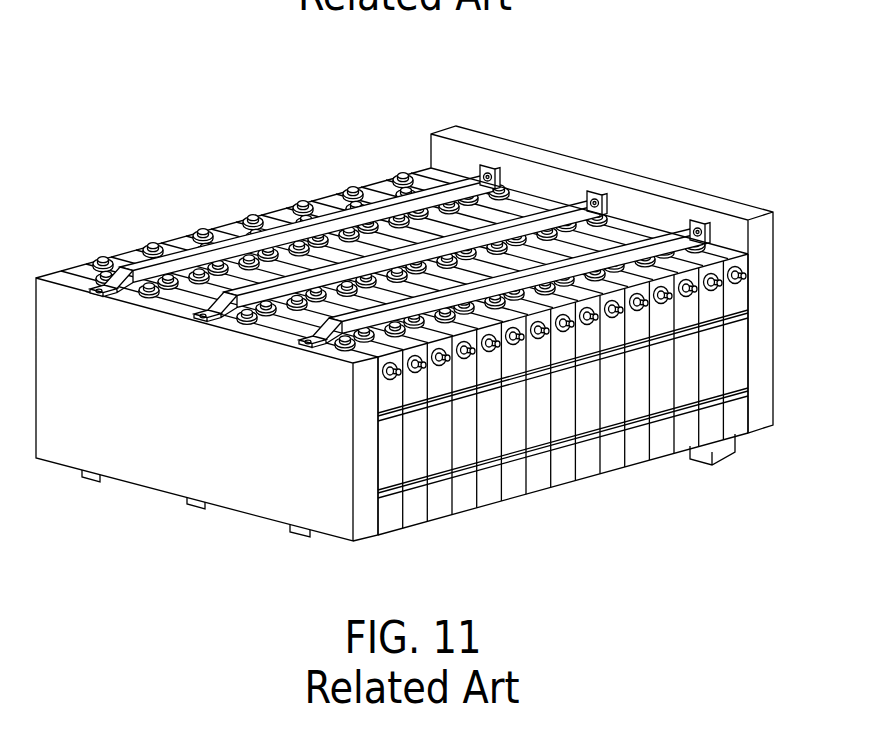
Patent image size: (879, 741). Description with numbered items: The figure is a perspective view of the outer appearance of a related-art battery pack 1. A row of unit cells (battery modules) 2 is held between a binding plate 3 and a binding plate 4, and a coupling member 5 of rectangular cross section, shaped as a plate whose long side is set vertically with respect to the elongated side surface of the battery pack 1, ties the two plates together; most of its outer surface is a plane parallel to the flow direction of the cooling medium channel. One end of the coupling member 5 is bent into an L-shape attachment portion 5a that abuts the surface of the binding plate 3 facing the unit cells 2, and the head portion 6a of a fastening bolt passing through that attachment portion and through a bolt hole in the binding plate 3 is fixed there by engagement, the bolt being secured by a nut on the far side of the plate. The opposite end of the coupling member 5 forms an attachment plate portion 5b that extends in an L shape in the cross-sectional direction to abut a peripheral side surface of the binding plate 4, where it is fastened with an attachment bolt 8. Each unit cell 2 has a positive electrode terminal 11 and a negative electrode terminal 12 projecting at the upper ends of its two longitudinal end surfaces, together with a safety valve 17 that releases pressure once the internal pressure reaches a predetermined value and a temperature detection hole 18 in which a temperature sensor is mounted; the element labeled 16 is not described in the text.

The battery pack 1 is at (518, 103).
The unit cell (battery module) 2 is at (413, 177).
The binding plate 3 is at (645, 203).
The binding plate 4 is at (157, 460).
The coupling member 5 is at (233, 242).
The L-shape attachment portion 5a is at (500, 178).
The attachment plate portion 5b is at (88, 297).
The head portion of the fastening bolt 6a is at (483, 166).
The attachment bolt 8 is at (102, 295).
The positive electrode terminal 11 is at (393, 379).
The negative electrode terminal 12 is at (418, 372).
The restraining band 16 is at (728, 245).
The safety valve 17 is at (305, 215).
The temperature detection hole 18 is at (443, 273).